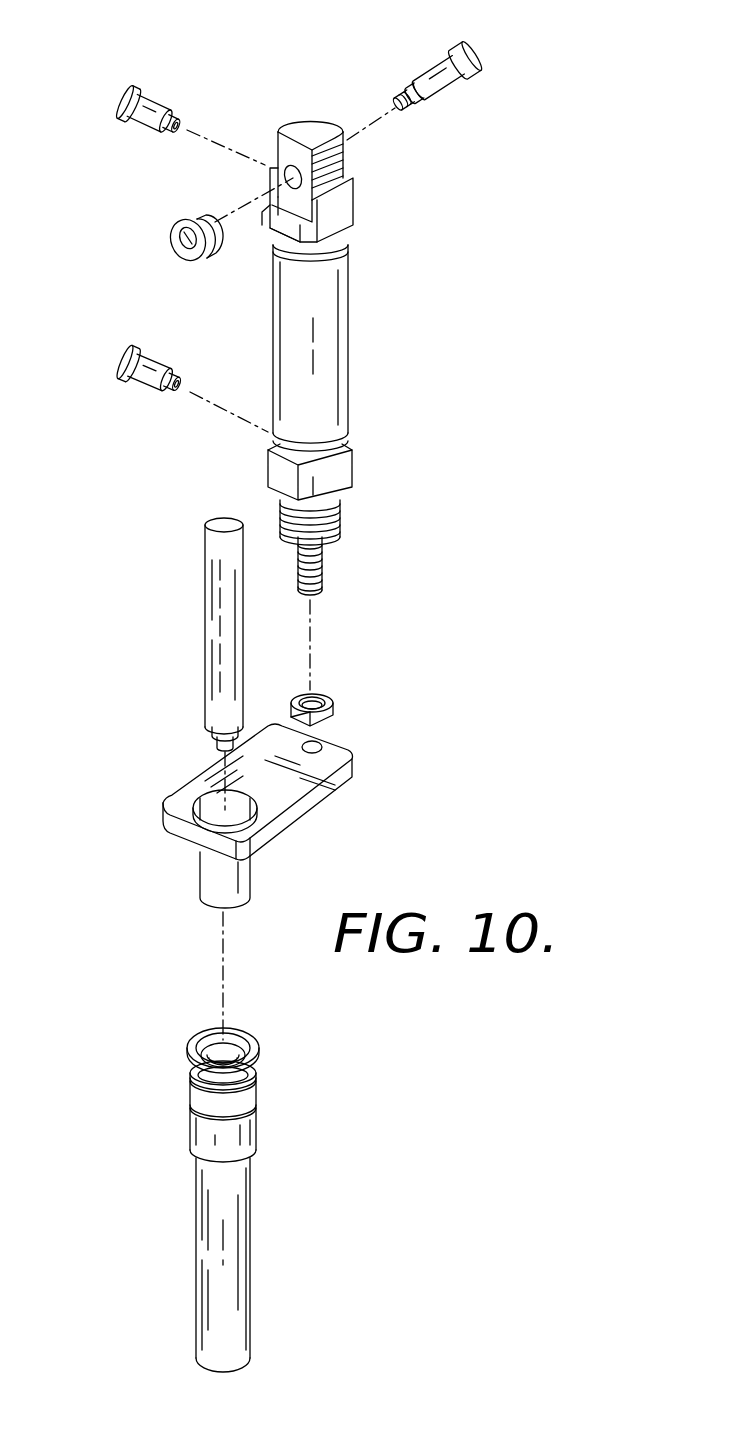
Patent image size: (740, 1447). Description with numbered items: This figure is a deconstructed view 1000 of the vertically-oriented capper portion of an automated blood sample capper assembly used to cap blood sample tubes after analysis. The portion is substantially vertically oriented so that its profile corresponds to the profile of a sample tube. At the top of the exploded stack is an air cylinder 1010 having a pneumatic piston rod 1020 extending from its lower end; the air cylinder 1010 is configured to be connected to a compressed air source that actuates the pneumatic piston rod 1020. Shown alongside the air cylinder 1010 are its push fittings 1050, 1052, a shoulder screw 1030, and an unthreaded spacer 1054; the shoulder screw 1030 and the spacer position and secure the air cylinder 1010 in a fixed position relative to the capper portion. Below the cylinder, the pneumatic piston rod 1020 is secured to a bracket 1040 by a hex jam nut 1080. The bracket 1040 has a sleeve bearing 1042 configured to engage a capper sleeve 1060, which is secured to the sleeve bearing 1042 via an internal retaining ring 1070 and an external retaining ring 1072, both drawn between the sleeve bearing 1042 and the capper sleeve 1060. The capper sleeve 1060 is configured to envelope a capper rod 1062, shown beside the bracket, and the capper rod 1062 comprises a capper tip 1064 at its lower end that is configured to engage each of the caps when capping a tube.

The deconstructed view 1000 is at (610, 147).
The air cylinder 1010 is at (345, 330).
The pneumatic piston rod 1020 is at (325, 560).
The shoulder screw 1030 is at (430, 65).
The bracket 1040 is at (358, 772).
The sleeve bearing 1042 is at (200, 878).
The push fitting 1050 is at (157, 95).
The push fitting 1052 is at (145, 390).
The unthreaded spacer 1054 is at (172, 252).
The capper sleeve 1060 is at (250, 1245).
The capper rod 1062 is at (205, 614).
The capper tip 1064 is at (214, 744).
The internal retaining ring 1070 is at (255, 1046).
The external retaining ring 1072 is at (197, 1042).
The hex jam nut 1080 is at (330, 702).